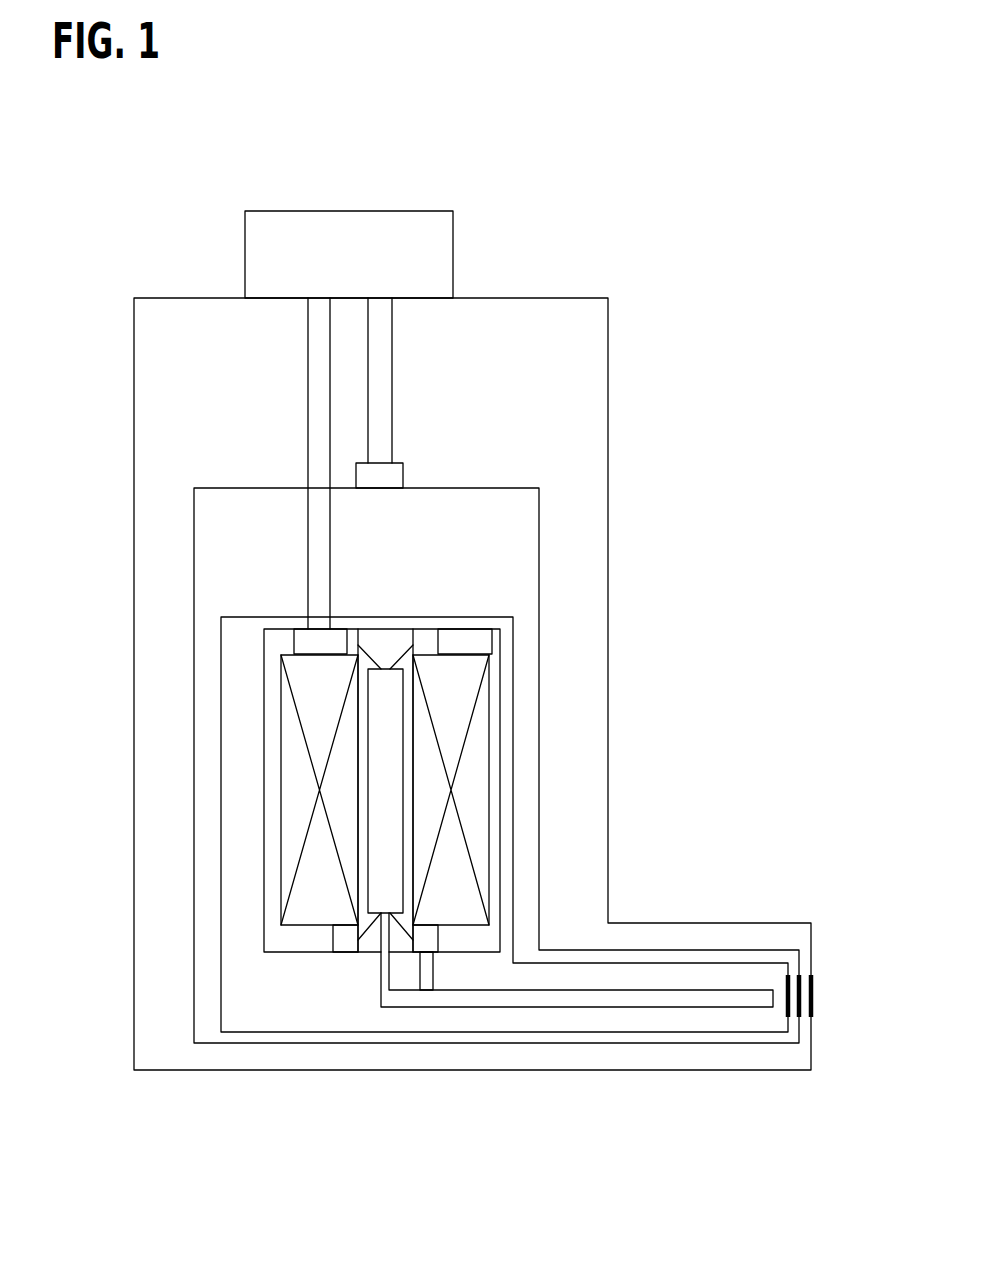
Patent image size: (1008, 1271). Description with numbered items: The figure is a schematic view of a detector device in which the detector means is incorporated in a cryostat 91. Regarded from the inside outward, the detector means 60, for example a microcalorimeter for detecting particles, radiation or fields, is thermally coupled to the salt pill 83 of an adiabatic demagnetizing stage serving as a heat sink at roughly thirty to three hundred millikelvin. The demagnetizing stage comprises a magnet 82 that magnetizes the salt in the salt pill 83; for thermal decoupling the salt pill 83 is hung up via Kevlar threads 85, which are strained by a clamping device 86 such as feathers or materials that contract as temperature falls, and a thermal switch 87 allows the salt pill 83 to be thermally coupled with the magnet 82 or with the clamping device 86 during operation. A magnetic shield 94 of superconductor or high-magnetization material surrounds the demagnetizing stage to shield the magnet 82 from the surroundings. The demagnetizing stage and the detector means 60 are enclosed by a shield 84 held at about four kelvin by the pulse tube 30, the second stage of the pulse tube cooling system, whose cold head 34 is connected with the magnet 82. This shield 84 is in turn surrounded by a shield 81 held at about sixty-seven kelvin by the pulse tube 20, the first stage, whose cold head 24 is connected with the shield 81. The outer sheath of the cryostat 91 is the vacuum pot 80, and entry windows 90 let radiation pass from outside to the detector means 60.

The pulse tube 20 is at (383, 350).
The cold head 24 is at (363, 462).
The pulse tube 30 is at (319, 377).
The cold head 34 is at (322, 643).
The detector means 60 is at (532, 998).
The vacuum pot 80 is at (609, 387).
The shield 81 is at (540, 517).
The magnet 82 is at (463, 680).
The salt pill 83 is at (405, 783).
The shield 84 is at (513, 797).
The Kevlar threads 85 is at (403, 923).
The clamping device 86 is at (342, 945).
The thermal switch 87 is at (425, 960).
The entry windows 90 is at (787, 977).
The cryostat 91 is at (147, 203).
The magnetic shield 94 is at (500, 745).